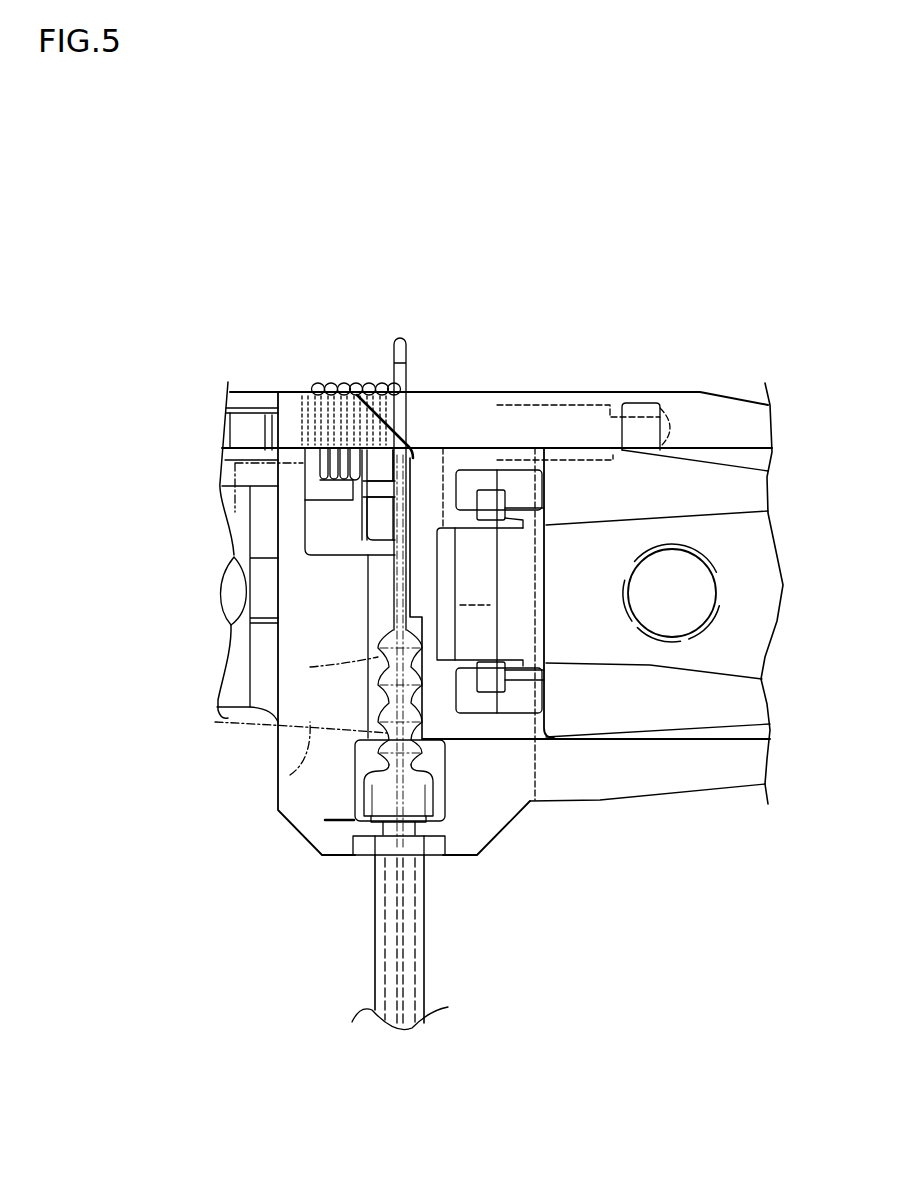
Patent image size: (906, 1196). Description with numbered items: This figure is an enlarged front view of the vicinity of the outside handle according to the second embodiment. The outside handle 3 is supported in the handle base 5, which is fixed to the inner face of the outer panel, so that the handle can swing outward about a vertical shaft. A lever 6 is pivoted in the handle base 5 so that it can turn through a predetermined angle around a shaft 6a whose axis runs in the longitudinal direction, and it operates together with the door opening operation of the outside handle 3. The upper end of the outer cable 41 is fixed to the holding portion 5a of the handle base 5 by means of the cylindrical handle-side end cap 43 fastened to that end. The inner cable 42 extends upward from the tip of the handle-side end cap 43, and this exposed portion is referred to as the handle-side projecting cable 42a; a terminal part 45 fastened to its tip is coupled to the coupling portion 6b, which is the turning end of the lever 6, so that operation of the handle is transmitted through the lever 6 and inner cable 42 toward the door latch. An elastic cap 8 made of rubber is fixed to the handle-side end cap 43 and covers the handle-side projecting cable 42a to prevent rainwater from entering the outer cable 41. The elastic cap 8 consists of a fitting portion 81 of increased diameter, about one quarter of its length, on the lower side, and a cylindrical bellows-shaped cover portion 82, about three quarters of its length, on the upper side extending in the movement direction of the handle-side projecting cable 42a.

The outside handle 3 is at (300, 768).
The handle base 5 is at (518, 392).
The holding portion 5a is at (357, 827).
The lever 6 is at (582, 400).
The shaft 6a is at (274, 420).
The coupling portion 6b is at (365, 513).
The elastic cap 8 is at (364, 790).
The outer cable 41 is at (415, 933).
The inner cable 42 is at (397, 975).
The handle-side projecting cable 42a is at (310, 667).
The handle-side end cap 43 is at (375, 898).
The terminal part 45 is at (440, 545).
The fitting portion 81 is at (416, 676).
The cover portion 82 is at (431, 787).